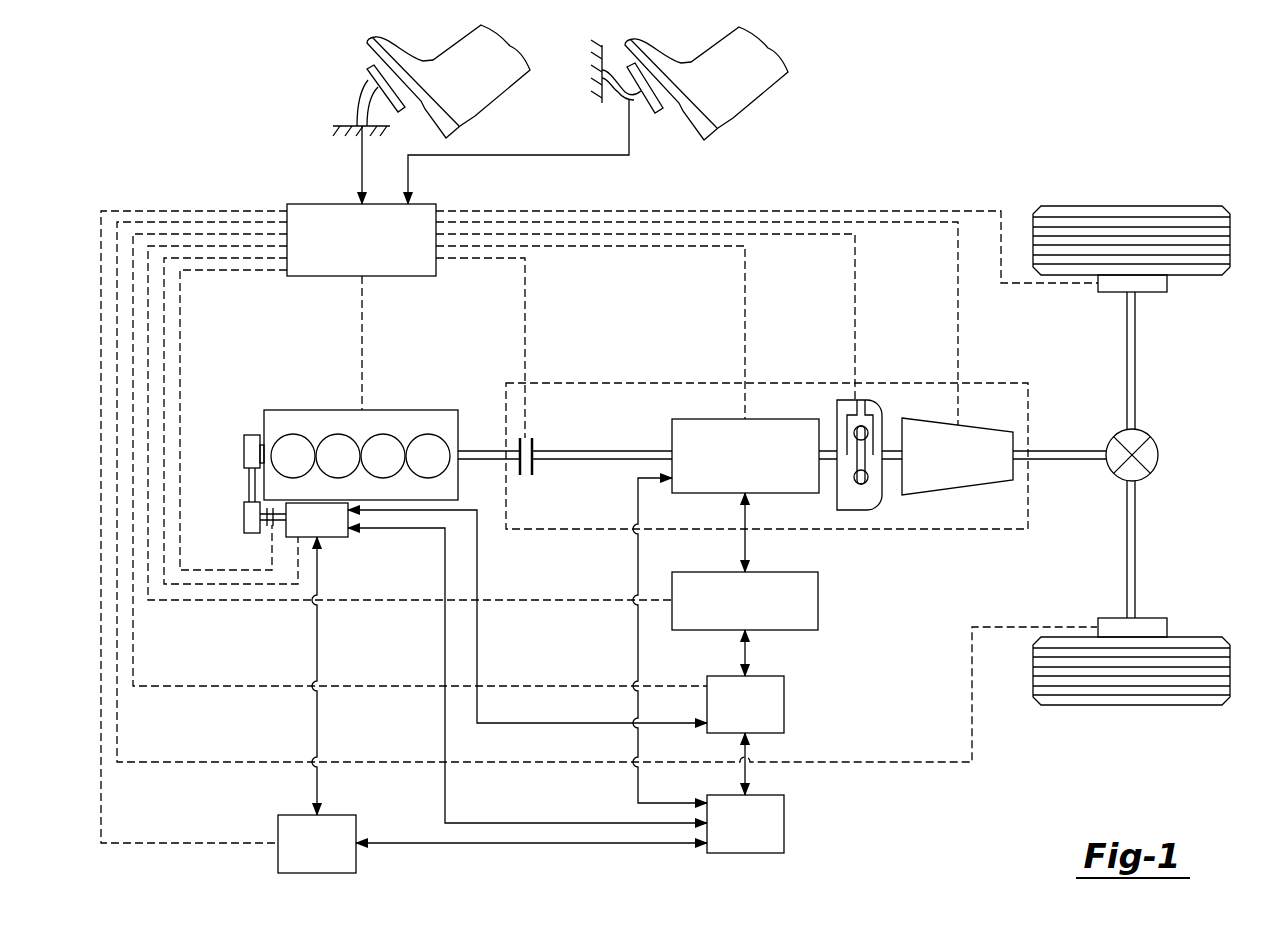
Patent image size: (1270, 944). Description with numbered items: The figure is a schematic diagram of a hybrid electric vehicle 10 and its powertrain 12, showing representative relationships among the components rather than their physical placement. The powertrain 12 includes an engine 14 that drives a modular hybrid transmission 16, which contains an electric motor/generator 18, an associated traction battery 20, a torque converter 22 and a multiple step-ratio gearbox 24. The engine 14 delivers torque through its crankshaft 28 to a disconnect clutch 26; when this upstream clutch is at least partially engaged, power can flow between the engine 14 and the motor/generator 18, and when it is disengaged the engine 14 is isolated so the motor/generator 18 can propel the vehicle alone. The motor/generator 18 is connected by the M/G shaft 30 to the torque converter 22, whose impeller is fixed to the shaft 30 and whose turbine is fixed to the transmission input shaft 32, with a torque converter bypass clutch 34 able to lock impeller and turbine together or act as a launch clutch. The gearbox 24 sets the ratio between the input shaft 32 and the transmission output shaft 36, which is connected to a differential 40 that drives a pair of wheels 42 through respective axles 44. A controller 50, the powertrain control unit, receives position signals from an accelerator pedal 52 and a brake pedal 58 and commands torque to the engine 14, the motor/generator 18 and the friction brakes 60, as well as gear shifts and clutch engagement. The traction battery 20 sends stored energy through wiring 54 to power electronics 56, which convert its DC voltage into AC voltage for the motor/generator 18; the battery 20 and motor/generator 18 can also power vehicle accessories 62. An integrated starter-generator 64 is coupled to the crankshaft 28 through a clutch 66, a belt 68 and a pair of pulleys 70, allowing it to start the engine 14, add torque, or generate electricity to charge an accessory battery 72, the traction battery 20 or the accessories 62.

The hybrid electric vehicle 10 is at (888, 165).
The powertrain 12 is at (420, 630).
The engine 14 is at (310, 408).
The transmission 16 is at (803, 383).
The electric motor/generator 18 is at (697, 418).
The traction battery 20 is at (784, 705).
The torque converter 22 is at (855, 510).
The gearbox 24 is at (960, 487).
The disconnect clutch 26 is at (536, 447).
The crankshaft 28 is at (262, 440).
The M/G shaft 30 is at (633, 448).
The transmission input shaft 32 is at (893, 448).
The torque converter bypass clutch 34 is at (860, 400).
The transmission output shaft 36 is at (1065, 448).
The differential 40 is at (1158, 455).
The wheels 42 is at (1130, 206).
The axles 44 is at (1137, 370).
The controller 50 is at (316, 204).
The accelerator pedal 52 is at (367, 78).
The wiring 54 is at (742, 655).
The power electronics 56 is at (818, 600).
The brake pedal 58 is at (660, 110).
The friction brakes 60 is at (1167, 283).
The vehicle accessories 62 is at (784, 823).
The integrated starter-generator 64 is at (335, 537).
The clutch 66 is at (268, 528).
The belt 68 is at (249, 488).
The pulleys 70 is at (244, 450).
The accessory battery 72 is at (338, 815).